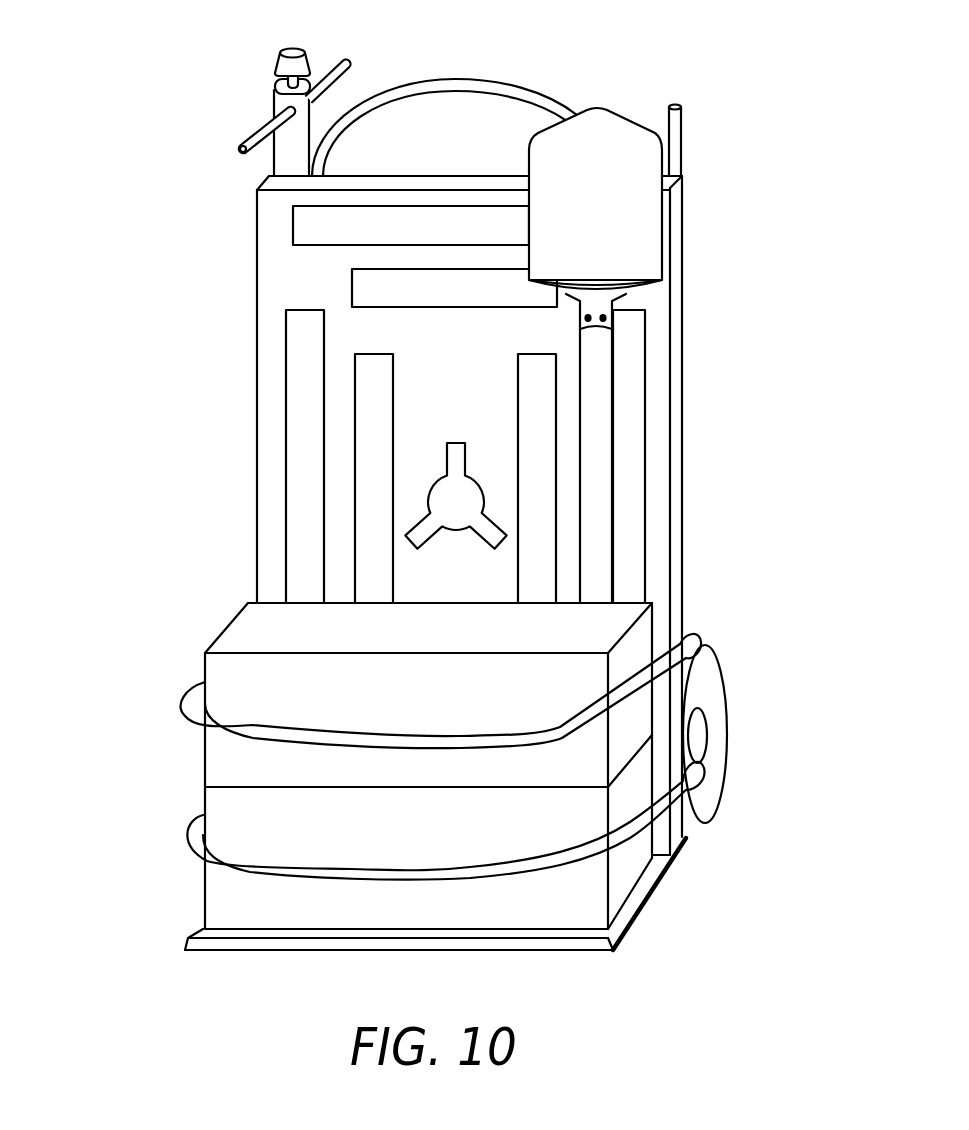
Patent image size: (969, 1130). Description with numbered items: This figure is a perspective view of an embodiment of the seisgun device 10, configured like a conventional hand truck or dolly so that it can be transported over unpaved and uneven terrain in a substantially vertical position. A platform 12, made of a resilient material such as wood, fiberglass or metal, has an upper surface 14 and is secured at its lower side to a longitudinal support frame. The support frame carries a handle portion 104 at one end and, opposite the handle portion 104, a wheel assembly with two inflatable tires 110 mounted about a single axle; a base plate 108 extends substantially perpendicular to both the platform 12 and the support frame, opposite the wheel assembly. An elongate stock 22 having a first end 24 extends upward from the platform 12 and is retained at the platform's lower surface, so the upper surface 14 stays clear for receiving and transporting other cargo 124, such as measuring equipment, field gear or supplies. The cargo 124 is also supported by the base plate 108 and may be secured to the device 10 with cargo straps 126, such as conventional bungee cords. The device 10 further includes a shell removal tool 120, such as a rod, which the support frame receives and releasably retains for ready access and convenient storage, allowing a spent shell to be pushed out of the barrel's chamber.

The seisgun device 10 is at (153, 320).
The platform 12 is at (681, 545).
The upper surface 14 is at (318, 286).
The elongate stock 22 is at (282, 158).
The first end 24 is at (275, 88).
The handle portion 104 is at (382, 100).
The base plate 108 is at (606, 937).
The inflatable tires 110 is at (712, 697).
The shell removal tool 120 is at (680, 133).
The cargo 124 is at (621, 240).
The cargo straps 126 is at (190, 703).